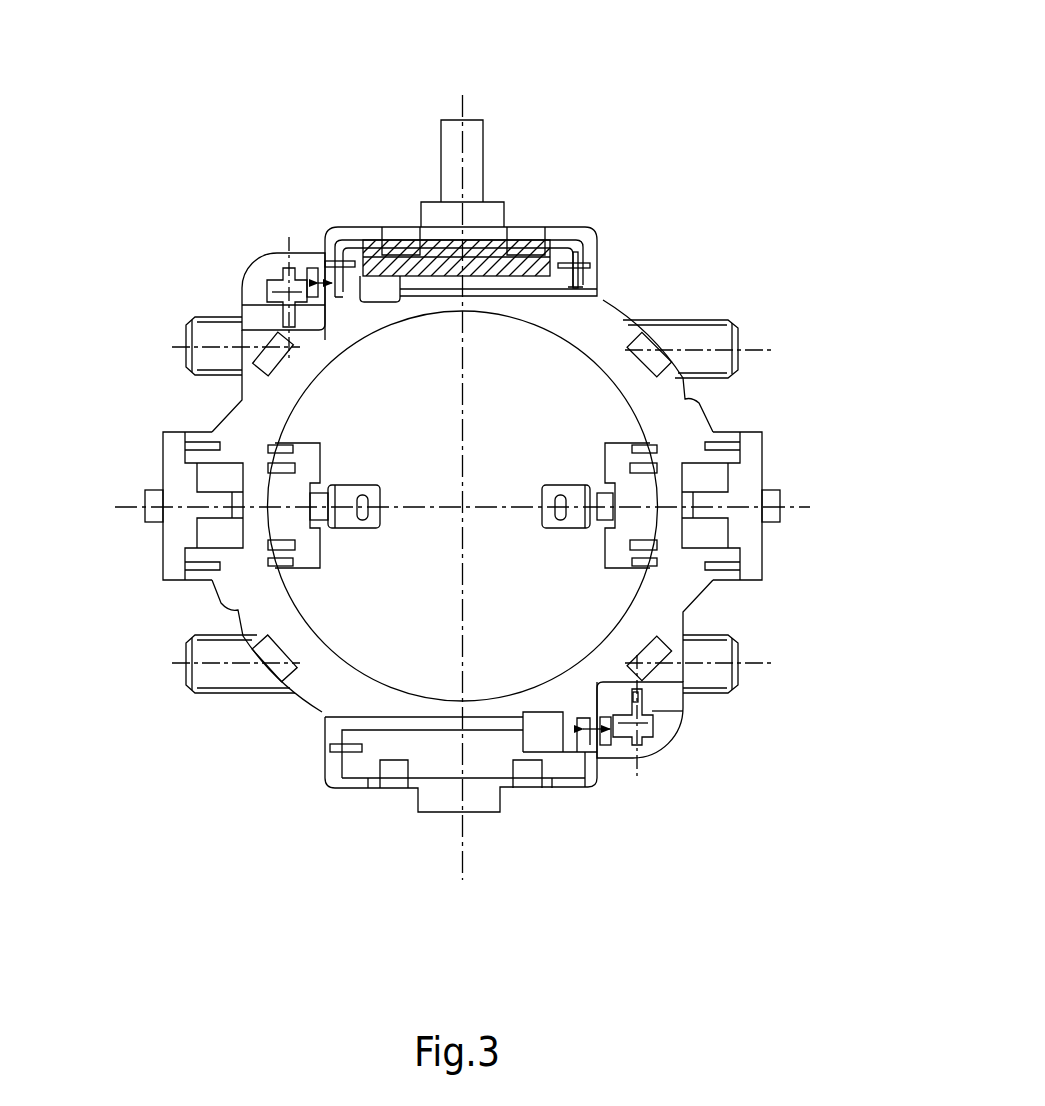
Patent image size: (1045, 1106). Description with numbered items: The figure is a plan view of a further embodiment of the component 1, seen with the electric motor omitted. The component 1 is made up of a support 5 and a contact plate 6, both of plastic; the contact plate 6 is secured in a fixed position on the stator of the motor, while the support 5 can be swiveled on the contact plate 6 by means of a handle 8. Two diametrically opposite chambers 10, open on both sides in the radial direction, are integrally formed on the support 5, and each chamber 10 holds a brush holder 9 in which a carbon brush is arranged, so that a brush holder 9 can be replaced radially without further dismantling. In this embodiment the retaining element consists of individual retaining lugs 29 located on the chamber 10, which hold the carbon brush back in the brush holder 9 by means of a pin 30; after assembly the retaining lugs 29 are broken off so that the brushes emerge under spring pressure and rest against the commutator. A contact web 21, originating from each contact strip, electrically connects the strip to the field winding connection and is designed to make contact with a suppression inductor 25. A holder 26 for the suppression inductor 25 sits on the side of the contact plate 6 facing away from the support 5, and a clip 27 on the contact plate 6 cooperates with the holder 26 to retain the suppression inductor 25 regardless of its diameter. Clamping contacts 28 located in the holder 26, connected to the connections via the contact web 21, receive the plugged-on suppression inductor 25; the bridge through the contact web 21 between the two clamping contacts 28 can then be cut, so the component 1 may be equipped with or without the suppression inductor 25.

The component 1 is at (812, 82).
The support 5 is at (608, 325).
The contact plate 6 is at (253, 346).
The handle 8 is at (463, 145).
The brush holder 9 is at (173, 448).
The chamber 10 is at (665, 495).
The contact web 21 is at (308, 272).
The suppression inductor 25 is at (590, 240).
The holder 26 is at (593, 236).
The clip 27 is at (394, 228).
The clamping contacts 28 is at (331, 257).
The retaining lugs 29 is at (347, 495).
The pin 30 is at (332, 520).